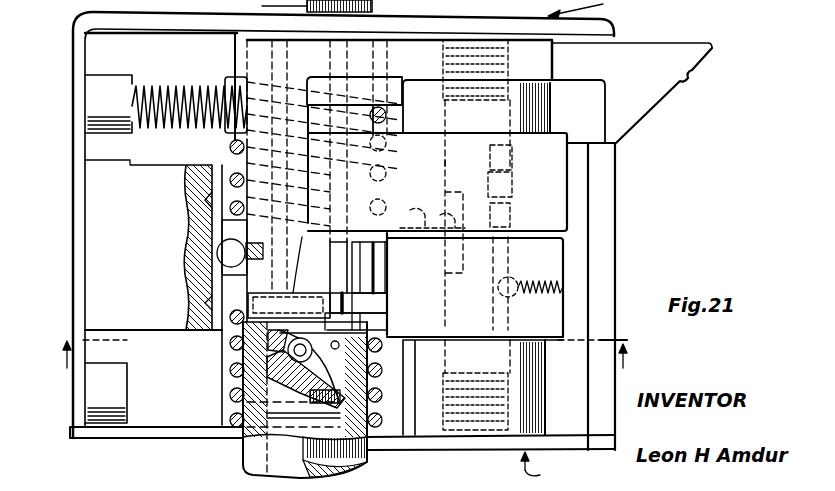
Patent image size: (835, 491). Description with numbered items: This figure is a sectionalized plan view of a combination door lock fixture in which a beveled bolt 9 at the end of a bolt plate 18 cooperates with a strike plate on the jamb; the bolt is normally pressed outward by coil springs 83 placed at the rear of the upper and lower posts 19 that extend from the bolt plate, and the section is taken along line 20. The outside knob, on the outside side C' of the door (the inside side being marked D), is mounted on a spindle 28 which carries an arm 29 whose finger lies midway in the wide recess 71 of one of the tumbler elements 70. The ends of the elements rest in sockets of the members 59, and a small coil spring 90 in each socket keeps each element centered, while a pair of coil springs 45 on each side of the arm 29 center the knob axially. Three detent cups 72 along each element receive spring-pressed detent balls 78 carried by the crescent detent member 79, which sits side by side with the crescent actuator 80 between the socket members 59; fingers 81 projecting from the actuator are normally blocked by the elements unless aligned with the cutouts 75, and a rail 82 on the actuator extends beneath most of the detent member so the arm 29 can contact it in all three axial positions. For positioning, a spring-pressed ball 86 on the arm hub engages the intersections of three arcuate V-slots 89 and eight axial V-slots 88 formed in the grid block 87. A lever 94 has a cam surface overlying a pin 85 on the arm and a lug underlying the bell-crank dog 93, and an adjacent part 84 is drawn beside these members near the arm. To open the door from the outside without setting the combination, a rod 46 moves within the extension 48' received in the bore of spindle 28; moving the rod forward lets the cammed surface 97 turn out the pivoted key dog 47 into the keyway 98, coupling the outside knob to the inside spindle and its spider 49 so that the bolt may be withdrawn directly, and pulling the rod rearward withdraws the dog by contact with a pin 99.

The beveled bolt 9 is at (687, 76).
The bolt plate 18 is at (590, 57).
The post 19 is at (190, 172).
The section line 20 is at (347, 343).
The spindle 28 is at (248, 455).
The arm 29 is at (426, 211).
The coil spring 45 is at (231, 147).
The rod 46 is at (262, 6).
The key dog 47 is at (340, 345).
The extension 48' is at (293, 230).
The spider 49 is at (390, 88).
The socket member 59 is at (540, 108).
The tumbler element 70 is at (462, 148).
The recess 71 is at (445, 196).
The detent cup 72 is at (505, 255).
The cutout 75 is at (490, 158).
The detent ball 78 is at (511, 297).
The detent member 79 is at (558, 272).
The actuator 80 is at (558, 205).
The finger 81 is at (510, 185).
The rail 82 is at (330, 262).
The coil spring 83 is at (183, 88).
The guide 84 is at (332, 270).
The pin 85 is at (386, 282).
The spring-pressed ball 86 is at (214, 258).
The grid block 87 is at (146, 158).
The V-slot 88 is at (213, 338).
The V-slot 89 is at (210, 200).
The coil spring 90 is at (508, 60).
The bell-crank dog 93 is at (300, 275).
The lever 94 is at (330, 303).
The cammed surface 97 is at (315, 388).
The keyway 98 is at (342, 394).
The pin 99 is at (370, 320).
The direction arrow D is at (585, 9).
The outside side C' is at (543, 467).